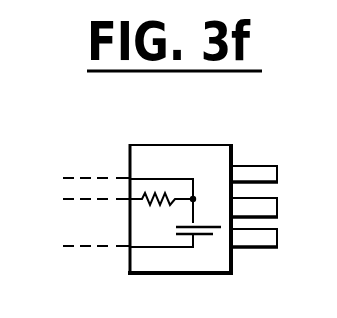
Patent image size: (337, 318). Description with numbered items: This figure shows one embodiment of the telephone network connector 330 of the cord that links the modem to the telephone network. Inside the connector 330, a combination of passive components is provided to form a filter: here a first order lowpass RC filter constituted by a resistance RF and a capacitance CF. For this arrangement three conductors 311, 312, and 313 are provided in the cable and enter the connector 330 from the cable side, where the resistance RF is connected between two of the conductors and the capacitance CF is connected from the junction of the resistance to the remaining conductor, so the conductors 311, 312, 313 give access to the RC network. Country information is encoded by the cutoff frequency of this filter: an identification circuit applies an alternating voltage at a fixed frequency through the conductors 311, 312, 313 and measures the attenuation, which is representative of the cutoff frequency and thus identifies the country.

The telephone network connector 330 is at (157, 153).
The conductor 311 is at (130, 178).
The conductor 312 is at (130, 199).
The conductor 313 is at (130, 246).